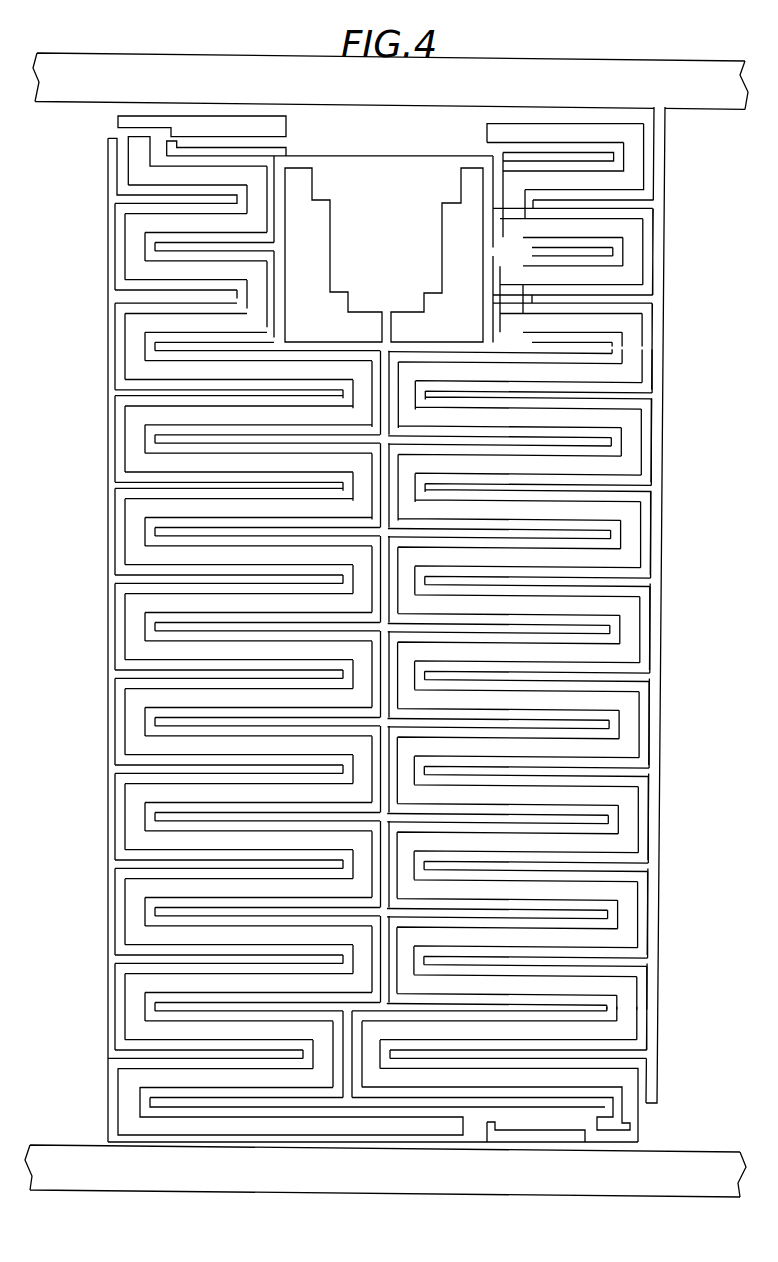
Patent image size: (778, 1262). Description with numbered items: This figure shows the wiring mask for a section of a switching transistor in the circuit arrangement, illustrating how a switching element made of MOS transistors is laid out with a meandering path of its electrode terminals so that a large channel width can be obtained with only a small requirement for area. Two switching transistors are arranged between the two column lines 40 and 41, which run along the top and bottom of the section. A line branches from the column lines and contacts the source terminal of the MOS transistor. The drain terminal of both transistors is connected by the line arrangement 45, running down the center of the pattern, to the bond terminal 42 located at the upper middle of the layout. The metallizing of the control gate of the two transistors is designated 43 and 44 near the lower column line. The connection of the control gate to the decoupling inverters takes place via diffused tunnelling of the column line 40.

The column line 40 is at (648, 1174).
The column line 41 is at (545, 75).
The bond terminal 42 is at (399, 253).
The control gate metallizing 43 is at (327, 1130).
The control gate metallizing 44 is at (527, 1130).
The line arrangement 45 is at (425, 352).